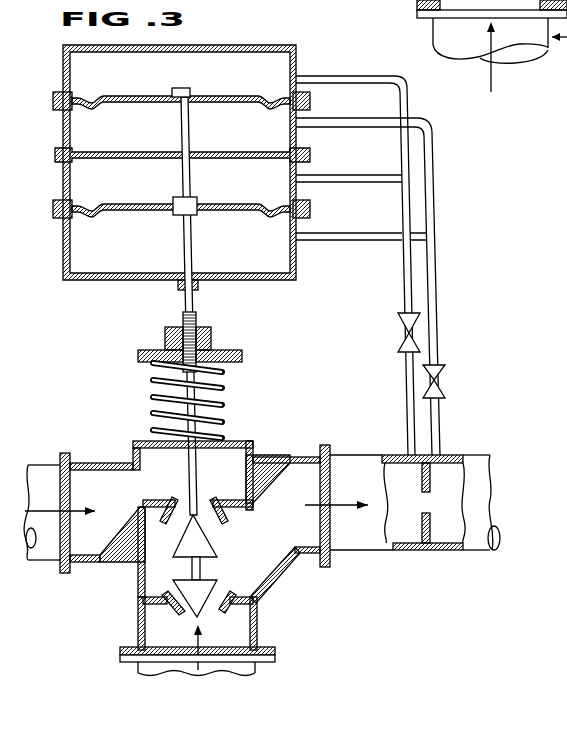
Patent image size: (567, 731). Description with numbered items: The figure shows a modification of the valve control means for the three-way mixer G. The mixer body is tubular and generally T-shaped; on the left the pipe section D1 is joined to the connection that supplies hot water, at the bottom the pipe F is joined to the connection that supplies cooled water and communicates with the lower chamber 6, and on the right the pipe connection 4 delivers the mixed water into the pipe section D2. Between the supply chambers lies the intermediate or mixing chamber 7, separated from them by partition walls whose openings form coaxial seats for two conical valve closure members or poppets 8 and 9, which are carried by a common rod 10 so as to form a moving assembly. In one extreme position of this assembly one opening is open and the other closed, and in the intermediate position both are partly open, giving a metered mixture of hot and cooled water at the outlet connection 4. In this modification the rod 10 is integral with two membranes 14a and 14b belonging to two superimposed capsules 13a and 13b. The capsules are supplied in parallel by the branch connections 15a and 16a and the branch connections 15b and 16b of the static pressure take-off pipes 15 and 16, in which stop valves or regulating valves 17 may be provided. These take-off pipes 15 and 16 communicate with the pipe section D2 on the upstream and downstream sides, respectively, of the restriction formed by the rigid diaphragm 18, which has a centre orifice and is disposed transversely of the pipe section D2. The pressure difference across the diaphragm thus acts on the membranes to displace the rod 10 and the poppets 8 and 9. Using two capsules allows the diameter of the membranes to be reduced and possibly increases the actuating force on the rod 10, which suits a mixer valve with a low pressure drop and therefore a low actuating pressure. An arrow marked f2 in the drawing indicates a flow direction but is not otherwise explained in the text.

The capsule 13b is at (63, 76).
The capsule 13a is at (63, 190).
The membrane 14b is at (105, 103).
The membrane 14a is at (115, 210).
The rod 10 is at (190, 472).
The three-way mixer G is at (131, 450).
The pipe section D1 is at (40, 465).
The intermediate or mixing chamber 7 is at (195, 547).
The conical valve closure member or poppet 8 is at (203, 545).
The conical valve closure member or poppet 9 is at (198, 593).
The lower chamber 6 is at (197, 633).
The pipe F is at (265, 665).
The pipe connection 4 is at (300, 553).
The pipe section D2 is at (497, 550).
The rigid diaphragm 18 is at (420, 527).
The branch connection 15b is at (355, 76).
The branch connection 16b is at (363, 118).
The branch connection 15a is at (363, 175).
The branch connection 16a is at (368, 233).
The stop valves or regulating valves 17 is at (430, 375).
The pipe 15 is at (404, 432).
The pipe 16 is at (440, 432).
The flow direction arrow f2 is at (503, 58).